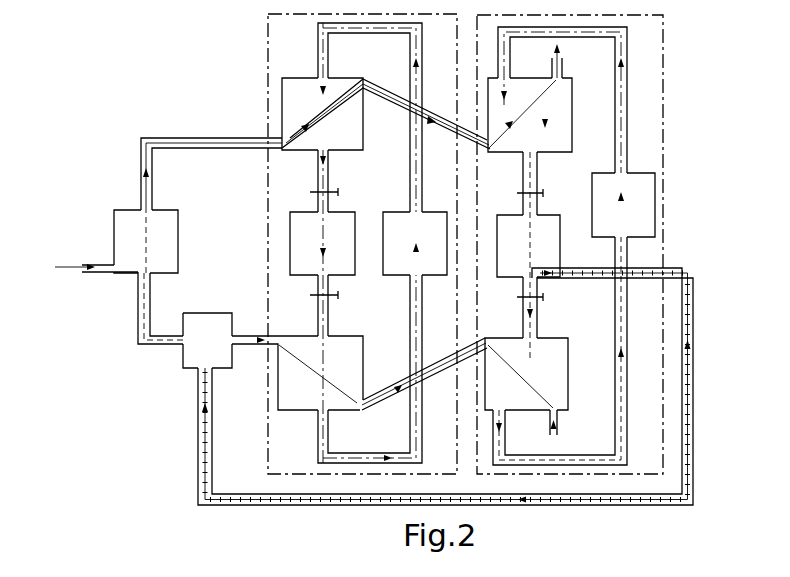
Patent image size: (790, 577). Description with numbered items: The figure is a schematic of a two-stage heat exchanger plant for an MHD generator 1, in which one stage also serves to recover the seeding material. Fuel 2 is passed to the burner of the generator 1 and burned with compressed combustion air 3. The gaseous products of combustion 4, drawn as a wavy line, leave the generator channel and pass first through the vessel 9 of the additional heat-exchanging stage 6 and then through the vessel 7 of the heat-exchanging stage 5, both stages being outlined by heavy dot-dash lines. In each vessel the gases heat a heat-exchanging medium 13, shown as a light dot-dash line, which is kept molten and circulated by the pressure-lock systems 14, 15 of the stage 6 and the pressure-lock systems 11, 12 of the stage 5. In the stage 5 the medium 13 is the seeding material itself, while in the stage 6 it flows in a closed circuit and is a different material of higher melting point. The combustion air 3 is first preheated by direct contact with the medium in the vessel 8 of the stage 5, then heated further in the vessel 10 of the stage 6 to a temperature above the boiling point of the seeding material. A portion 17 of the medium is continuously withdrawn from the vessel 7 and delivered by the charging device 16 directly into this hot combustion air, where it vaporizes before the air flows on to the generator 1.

The MHD generator 1 is at (178, 247).
The fuel 2 is at (62, 267).
The compressed combustion air 3 is at (558, 428).
The gaseous products of combustion 4 is at (141, 175).
The heat-exchanging stage 5 is at (572, 188).
The additional heat-exchanging stage 6 is at (385, 188).
The vessel 7 is at (572, 113).
The vessel 8 is at (568, 365).
The vessel 9 is at (364, 130).
The vessel 10 is at (364, 360).
The pressure-lock system 11 is at (560, 248).
The pressure-lock system 12 is at (608, 173).
The heat-exchanging medium 13 is at (323, 174).
The pressure-lock system 14 is at (345, 276).
The pressure-lock system 15 is at (430, 212).
The charging device 16 is at (200, 313).
The portion of heat-exchanging medium 17 is at (690, 328).